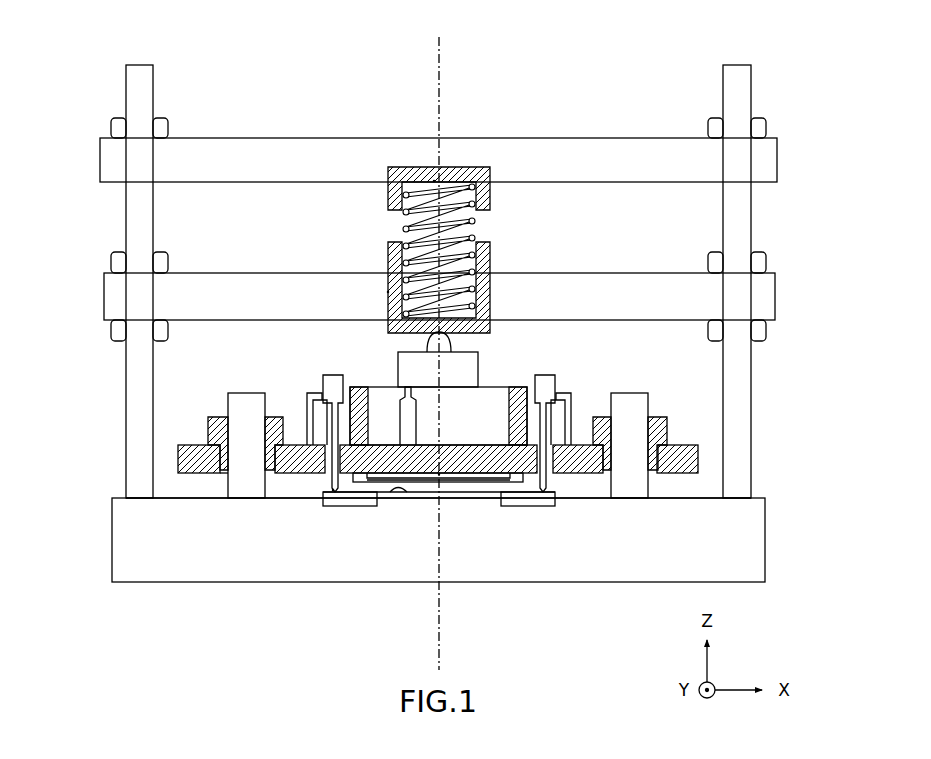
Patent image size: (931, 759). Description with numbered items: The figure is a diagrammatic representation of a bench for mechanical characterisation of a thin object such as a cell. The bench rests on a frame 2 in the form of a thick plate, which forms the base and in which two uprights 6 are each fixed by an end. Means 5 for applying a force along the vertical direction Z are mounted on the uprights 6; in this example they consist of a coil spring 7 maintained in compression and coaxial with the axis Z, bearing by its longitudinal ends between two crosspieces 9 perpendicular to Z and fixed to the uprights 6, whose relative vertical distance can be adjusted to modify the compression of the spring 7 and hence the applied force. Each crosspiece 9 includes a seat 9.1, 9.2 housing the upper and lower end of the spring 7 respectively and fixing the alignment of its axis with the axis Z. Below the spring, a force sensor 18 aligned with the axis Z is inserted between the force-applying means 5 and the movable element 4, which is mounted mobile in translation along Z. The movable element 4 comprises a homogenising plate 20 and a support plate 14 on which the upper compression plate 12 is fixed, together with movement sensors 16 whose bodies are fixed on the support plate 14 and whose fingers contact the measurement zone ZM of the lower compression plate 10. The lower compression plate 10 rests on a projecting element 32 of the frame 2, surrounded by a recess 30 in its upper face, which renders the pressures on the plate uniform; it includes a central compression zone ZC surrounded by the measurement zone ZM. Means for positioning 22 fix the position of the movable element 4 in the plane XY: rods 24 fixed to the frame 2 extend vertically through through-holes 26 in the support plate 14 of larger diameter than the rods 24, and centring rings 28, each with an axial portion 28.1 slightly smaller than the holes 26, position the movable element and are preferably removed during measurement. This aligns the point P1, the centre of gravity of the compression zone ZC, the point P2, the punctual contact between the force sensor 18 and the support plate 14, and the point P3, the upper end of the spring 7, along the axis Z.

The frame 2 is at (115, 535).
The movable element 4 is at (92, 388).
The means for applying a force 5 is at (451, 281).
The uprights 6 is at (135, 222).
The coil spring 7 is at (474, 213).
The crosspieces 9 is at (456, 140).
The seat 9.1 is at (490, 192).
The seat 9.2 is at (492, 262).
The lower compression plate 10 is at (431, 495).
The upper compression plate 12 is at (467, 476).
The support plate 14 is at (700, 465).
The movement sensor 16 is at (330, 370).
The force sensor 18 is at (478, 362).
The homogenising plate 20 is at (510, 392).
The means for positioning 22 is at (243, 506).
The rods 24 is at (635, 486).
The through-holes 26 is at (223, 483).
The centring rings 28 is at (223, 432).
The axial portion 28.1 is at (210, 455).
The recess 30 is at (333, 506).
The projecting element 32 is at (510, 506).
The centre of gravity of the compression zone P1 is at (439, 475).
The connection point of the punctual contact type P2 is at (387, 292).
The upper longitudinal end of the spring P3 is at (433, 180).
The vertical direction Z is at (436, 58).
The compression zone ZC is at (400, 490).
The measurement zone ZM is at (323, 490).